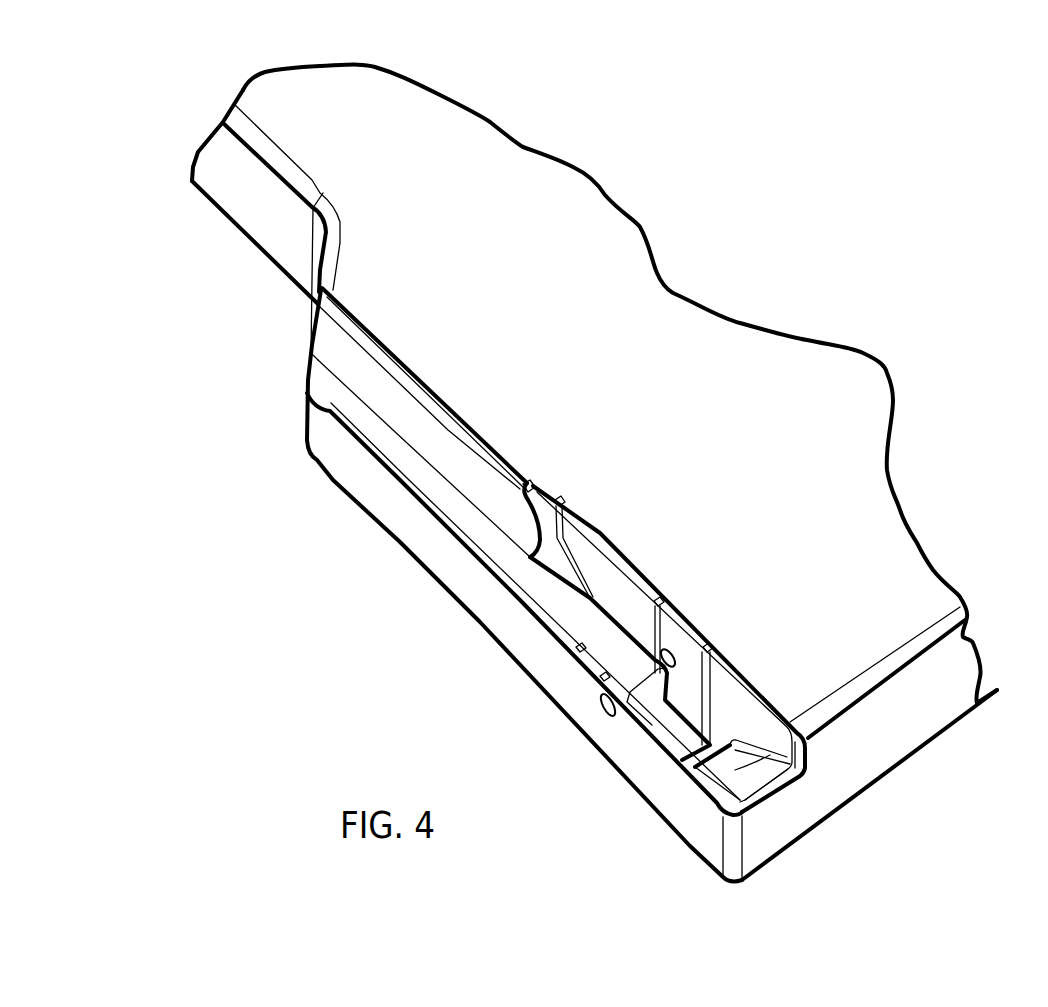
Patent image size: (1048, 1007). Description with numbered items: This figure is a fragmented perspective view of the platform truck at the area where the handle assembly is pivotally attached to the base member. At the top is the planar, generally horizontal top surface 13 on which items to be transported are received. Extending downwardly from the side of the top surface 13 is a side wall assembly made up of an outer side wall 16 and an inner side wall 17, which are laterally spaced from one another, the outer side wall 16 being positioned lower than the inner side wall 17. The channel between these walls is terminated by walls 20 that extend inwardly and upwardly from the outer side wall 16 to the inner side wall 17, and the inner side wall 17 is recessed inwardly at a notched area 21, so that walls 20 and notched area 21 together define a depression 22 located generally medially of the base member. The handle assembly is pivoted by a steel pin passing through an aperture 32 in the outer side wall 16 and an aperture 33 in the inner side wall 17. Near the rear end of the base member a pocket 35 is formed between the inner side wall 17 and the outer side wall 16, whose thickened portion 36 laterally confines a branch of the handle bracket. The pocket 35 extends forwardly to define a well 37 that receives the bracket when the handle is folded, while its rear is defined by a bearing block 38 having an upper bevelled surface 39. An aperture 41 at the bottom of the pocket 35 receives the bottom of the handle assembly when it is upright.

The top surface 13 is at (557, 253).
The outer side wall 16 is at (383, 500).
The inner side wall 17 is at (370, 387).
The walls 20 is at (313, 342).
The notched area 21 is at (245, 197).
The depressions 22 is at (250, 275).
The aperture 32 is at (605, 712).
The aperture 33 is at (672, 657).
The pocket 35 is at (713, 727).
The thickened portion 36 is at (626, 667).
The well 37 is at (600, 595).
The bearing block 38 is at (758, 797).
The bevelled surface 39 is at (802, 760).
The aperture 41 is at (680, 733).